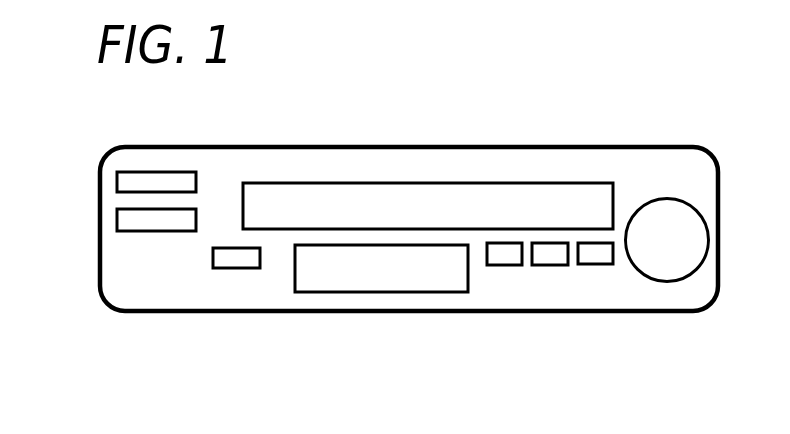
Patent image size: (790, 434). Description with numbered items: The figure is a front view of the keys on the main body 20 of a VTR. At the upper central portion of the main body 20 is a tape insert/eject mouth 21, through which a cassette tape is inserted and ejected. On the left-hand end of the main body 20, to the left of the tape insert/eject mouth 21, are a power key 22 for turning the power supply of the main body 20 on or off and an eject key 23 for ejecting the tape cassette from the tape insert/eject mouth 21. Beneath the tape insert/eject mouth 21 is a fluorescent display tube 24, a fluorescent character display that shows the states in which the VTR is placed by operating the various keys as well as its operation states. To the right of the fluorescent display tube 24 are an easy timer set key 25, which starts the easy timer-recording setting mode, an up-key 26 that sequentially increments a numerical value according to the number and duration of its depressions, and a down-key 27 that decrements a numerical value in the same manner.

The main body 20 is at (603, 145).
The tape insert/eject mouth 21 is at (335, 183).
The power key 22 is at (117, 177).
The eject key 23 is at (117, 212).
The fluorescent display tube 24 is at (360, 293).
The easy timer set key 25 is at (493, 265).
The up-key 26 is at (538, 265).
The down-key 27 is at (593, 265).